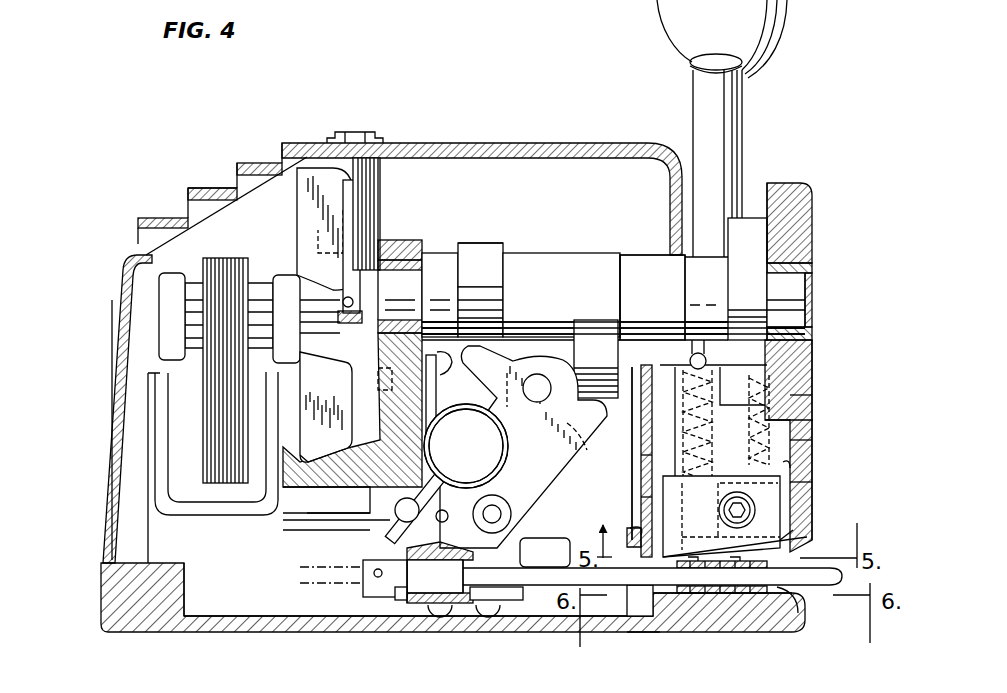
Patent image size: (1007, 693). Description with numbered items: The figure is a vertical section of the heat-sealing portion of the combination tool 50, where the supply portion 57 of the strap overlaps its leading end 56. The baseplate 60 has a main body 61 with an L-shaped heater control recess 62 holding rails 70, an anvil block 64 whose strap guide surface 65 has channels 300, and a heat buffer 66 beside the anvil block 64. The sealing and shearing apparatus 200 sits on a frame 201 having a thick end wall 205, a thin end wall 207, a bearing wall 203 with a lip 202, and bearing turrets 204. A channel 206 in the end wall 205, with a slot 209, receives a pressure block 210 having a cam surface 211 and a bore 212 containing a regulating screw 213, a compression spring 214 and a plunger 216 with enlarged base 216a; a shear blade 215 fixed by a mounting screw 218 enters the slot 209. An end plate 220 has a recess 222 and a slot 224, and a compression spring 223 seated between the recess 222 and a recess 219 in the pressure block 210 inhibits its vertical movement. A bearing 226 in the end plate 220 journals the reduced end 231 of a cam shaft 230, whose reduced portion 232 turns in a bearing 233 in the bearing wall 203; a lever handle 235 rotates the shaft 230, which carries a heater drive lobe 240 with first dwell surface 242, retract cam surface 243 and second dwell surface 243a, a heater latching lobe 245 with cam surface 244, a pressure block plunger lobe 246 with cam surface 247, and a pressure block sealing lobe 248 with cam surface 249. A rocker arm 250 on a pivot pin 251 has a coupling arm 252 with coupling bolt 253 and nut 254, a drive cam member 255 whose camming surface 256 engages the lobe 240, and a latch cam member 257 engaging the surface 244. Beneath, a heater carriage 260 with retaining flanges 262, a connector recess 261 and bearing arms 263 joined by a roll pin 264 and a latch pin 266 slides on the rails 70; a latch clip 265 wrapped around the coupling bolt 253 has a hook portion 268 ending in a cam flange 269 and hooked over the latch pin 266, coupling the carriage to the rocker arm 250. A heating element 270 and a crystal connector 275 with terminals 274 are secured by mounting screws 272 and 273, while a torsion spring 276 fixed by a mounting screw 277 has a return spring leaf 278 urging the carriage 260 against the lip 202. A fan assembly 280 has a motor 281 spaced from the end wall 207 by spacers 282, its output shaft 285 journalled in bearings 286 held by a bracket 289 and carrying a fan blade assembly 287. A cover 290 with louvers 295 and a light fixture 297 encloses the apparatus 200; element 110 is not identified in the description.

The sewing machine 50 is at (235, 84).
The upper gripping surface 56 is at (713, 572).
The lower gripping surface 57 is at (757, 572).
The base 60 is at (98, 618).
The base block 61 is at (141, 620).
The base plate 62 is at (222, 619).
The base end block 64 is at (686, 620).
The spring tongue 65 is at (808, 611).
The base bottom 66 is at (646, 632).
The slide plate 70 is at (548, 603).
The clamp plate 110 is at (842, 577).
The drive unit 200 is at (482, 122).
The interior chamber 201 is at (158, 528).
The motor frame 202 is at (292, 498).
The support body 203 is at (417, 240).
The wall 204 is at (604, 453).
The wall rib 205 is at (641, 497).
The partition 206 is at (680, 363).
The housing side wall 207 is at (128, 461).
The lug 209 is at (638, 530).
The inner wall 210 is at (641, 454).
The end wall 211 is at (810, 347).
The springs 212 is at (780, 457).
The bottom edge 213 is at (793, 548).
The wall portion 214 is at (795, 482).
The adjusting screw 215 is at (752, 508).
The pin 216 is at (694, 353).
The pin bracket 216a is at (707, 360).
The corner 218 is at (813, 522).
The wall portion 219 is at (813, 401).
The end wall outer surface 220 is at (813, 370).
The recess 222 is at (800, 443).
The pin 223 is at (813, 422).
The slot 224 is at (795, 462).
The bearing flange 226 is at (812, 268).
The shaft assembly 230 is at (650, 250).
The bearing 231 is at (793, 300).
The shaft collar 232 is at (430, 280).
The bearing collar 233 is at (393, 238).
The handle rod 235 is at (736, 110).
The cam 240 is at (486, 241).
The shaft 242 is at (498, 322).
The cam body 243 is at (503, 288).
The cam top 243a is at (496, 256).
The shaft portion 244 is at (612, 330).
The eccentric 245 is at (592, 268).
The crank block 246 is at (700, 268).
The rod socket 247 is at (717, 300).
The bearing block 248 is at (752, 217).
The bearing block face 249 is at (760, 243).
The drive plate 250 is at (553, 484).
The pivot pin 251 is at (535, 386).
The stop block 252 is at (545, 553).
The roller 253 is at (495, 522).
The wheel hub 254 is at (478, 485).
The guide 255 is at (432, 368).
The groove 256 is at (478, 338).
The link 257 is at (592, 397).
The axis line 260 is at (395, 553).
The side wall 261 is at (408, 603).
The foot 262 is at (516, 588).
The bracket arm 263 is at (333, 500).
The slide block 264 is at (440, 567).
The bracket plate 265 is at (286, 531).
The wheel rim 266 is at (445, 447).
The wheel 268 is at (428, 440).
The lever lower arm 269 is at (323, 443).
The stop 270 is at (628, 592).
The roller 272 is at (488, 617).
The roller 273 is at (437, 617).
The end piece 274 is at (383, 586).
The side wall 275 is at (458, 590).
The plate surface 276 is at (543, 420).
The hook 277 is at (447, 347).
The crank arm 278 is at (406, 512).
The motor end cap 280 is at (262, 280).
The motor coil 281 is at (229, 258).
The mounting plate 282 is at (152, 372).
The lever 285 is at (303, 285).
The motor end cap 286 is at (166, 285).
The upper lever 287 is at (306, 158).
The motor shaft 289 is at (190, 315).
The housing 290 is at (600, 148).
The housing step 295 is at (240, 168).
The button 297 is at (366, 131).
The gripping surface 300 is at (707, 597).